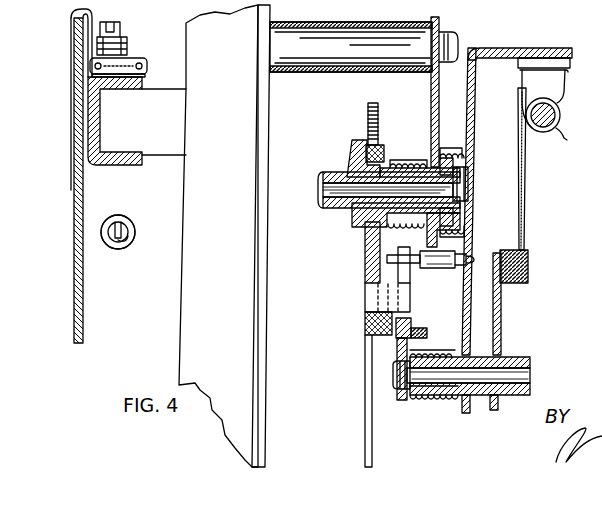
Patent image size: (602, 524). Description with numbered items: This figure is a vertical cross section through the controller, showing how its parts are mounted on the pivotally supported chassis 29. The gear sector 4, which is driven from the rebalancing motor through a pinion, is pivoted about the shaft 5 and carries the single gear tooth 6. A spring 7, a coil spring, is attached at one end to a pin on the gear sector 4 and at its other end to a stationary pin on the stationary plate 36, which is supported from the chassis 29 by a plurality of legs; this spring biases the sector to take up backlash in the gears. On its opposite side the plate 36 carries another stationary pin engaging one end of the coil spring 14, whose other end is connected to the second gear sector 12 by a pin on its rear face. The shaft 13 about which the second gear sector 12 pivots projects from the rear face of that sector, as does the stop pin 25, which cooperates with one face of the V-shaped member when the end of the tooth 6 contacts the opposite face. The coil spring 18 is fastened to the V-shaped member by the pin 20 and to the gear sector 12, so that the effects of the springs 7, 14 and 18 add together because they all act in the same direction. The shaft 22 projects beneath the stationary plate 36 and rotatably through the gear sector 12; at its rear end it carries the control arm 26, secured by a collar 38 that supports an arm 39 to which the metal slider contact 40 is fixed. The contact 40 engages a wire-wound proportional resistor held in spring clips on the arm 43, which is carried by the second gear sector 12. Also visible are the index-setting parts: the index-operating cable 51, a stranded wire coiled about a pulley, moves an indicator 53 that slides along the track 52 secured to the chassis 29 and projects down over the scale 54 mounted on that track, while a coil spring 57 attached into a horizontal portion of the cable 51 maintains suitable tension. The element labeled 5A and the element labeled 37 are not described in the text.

The gear sector 4 is at (368, 118).
The pivot shaft 5 is at (325, 175).
The housing 5A is at (352, 165).
The gear tooth 6 is at (365, 298).
The spring 7 is at (395, 160).
The second gear sector 12 is at (468, 95).
The shaft 13 is at (322, 190).
The spring 14 is at (449, 148).
The coil spring 18 is at (443, 395).
The pin 20 is at (412, 330).
The shaft 22 is at (531, 372).
The stop pin 25 is at (447, 268).
The control arm 26 is at (534, 302).
The chassis 29 is at (92, 117).
The stationary plate 36 is at (431, 95).
The shaft 37 is at (383, 22).
The collar 38 is at (538, 350).
The arm 39 is at (507, 320).
The slider contact 40 is at (522, 205).
The arm 43 is at (496, 48).
The index-operating cable 51 is at (128, 45).
The track 52 is at (147, 66).
The indicator 53 is at (74, 14).
The scale 54 is at (76, 236).
The coil spring 57 is at (133, 224).